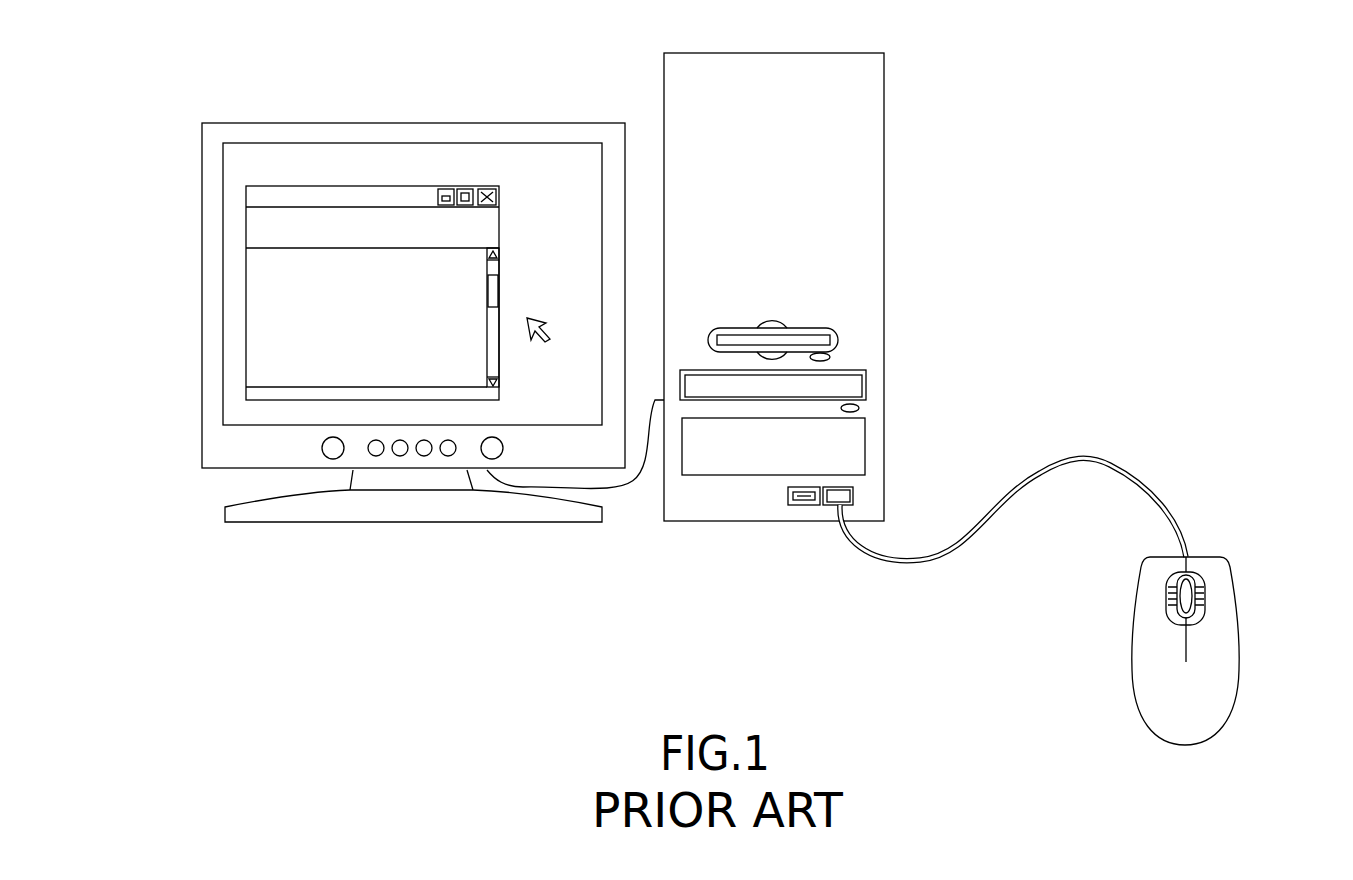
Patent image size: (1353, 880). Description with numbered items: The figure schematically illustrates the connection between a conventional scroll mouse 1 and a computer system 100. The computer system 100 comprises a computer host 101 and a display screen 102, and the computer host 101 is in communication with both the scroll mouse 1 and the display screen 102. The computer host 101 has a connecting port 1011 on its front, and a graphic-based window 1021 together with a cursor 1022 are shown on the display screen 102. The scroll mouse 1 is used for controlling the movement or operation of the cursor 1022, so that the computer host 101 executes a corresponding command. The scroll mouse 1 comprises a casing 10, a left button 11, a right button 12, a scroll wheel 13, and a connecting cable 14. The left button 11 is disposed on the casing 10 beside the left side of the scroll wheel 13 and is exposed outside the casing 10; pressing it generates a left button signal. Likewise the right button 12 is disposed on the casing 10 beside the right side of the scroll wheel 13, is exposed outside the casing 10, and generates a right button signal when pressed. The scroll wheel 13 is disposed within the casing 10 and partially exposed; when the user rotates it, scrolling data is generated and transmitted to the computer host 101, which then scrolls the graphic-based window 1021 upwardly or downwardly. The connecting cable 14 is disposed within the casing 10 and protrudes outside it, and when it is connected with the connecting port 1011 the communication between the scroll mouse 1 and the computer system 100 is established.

The scroll mouse 1 is at (1122, 591).
The casing 10 is at (1213, 670).
The left button 11 is at (1150, 598).
The right button 12 is at (1217, 597).
The scroll mouse 13 is at (1180, 577).
The connecting cable 14 is at (1098, 462).
The computer system 100 is at (693, 30).
The computer host 101 is at (778, 60).
The connecting port 1011 is at (788, 508).
The display screen 102 is at (510, 122).
The graphic-based window 1021 is at (327, 228).
The cursor 1022 is at (549, 340).